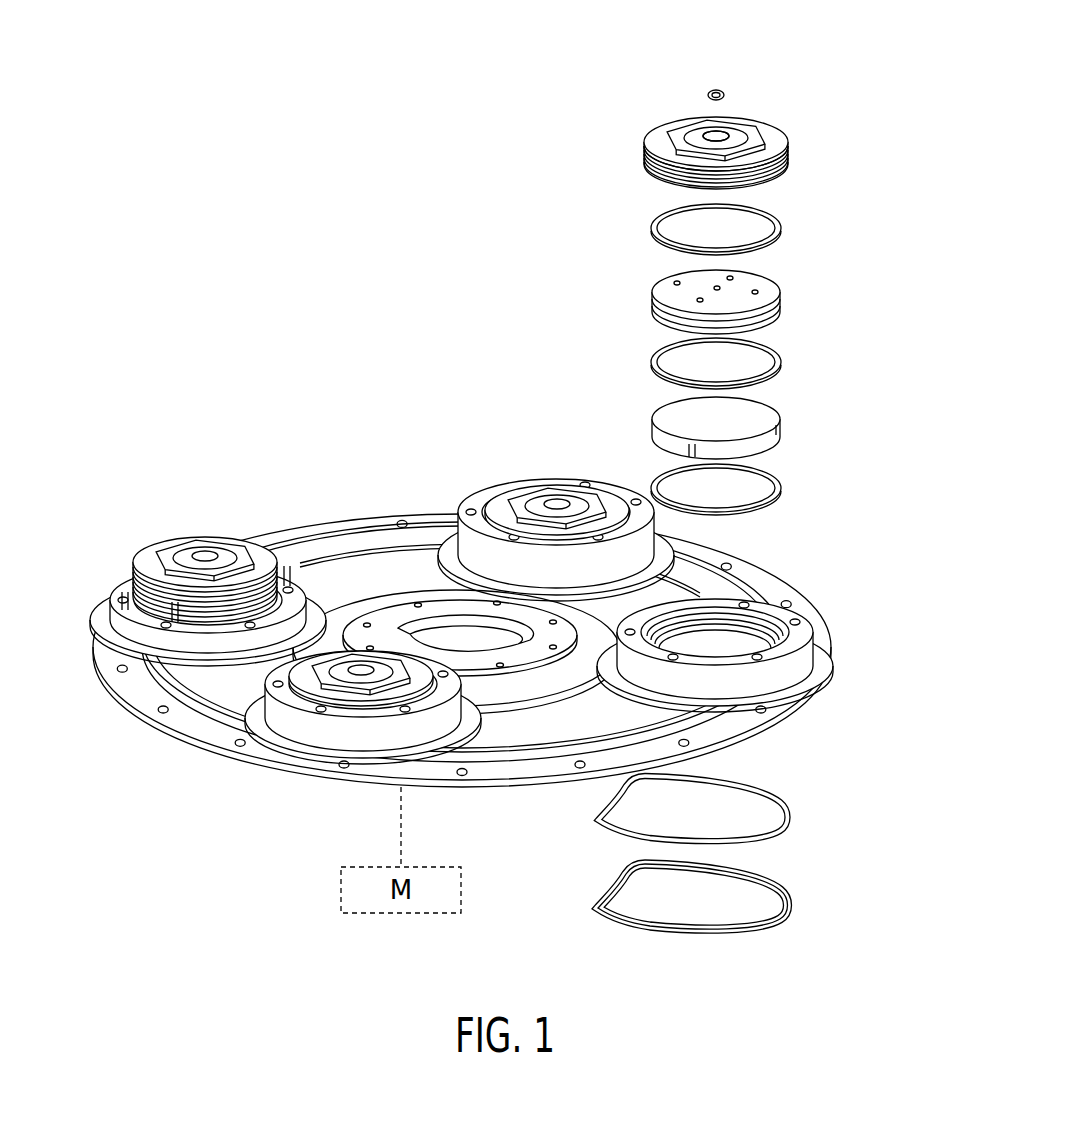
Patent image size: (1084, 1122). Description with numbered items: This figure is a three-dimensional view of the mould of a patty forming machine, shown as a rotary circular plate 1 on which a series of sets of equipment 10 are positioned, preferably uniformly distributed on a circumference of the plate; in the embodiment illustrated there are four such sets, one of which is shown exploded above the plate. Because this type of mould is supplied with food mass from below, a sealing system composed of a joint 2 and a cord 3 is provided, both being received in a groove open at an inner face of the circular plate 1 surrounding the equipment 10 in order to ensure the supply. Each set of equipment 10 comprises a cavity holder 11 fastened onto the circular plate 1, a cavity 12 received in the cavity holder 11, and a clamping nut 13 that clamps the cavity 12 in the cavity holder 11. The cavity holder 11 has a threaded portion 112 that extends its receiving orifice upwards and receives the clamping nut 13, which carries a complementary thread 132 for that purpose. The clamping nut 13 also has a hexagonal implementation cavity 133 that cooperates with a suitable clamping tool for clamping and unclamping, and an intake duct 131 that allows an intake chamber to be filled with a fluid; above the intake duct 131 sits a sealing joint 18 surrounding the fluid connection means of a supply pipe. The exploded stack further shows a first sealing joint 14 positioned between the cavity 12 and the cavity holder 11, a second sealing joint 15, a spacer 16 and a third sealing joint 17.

The circular plate 1 is at (478, 633).
The joint 2 is at (790, 820).
The cord 3 is at (790, 908).
The equipment 10 is at (128, 545).
The cavity holder 11 is at (499, 633).
The threaded portion 112 is at (795, 642).
The cavity 12 is at (781, 425).
The clamping nut 13 is at (696, 103).
The intake duct 131 is at (711, 128).
The complementary thread 132 is at (644, 158).
The implementation cavity 133 is at (677, 120).
The first sealing joint 14 is at (781, 488).
The second sealing joint 15 is at (781, 362).
The spacer 16 is at (781, 297).
The third sealing joint 17 is at (781, 228).
The sealing joint 18 is at (725, 96).